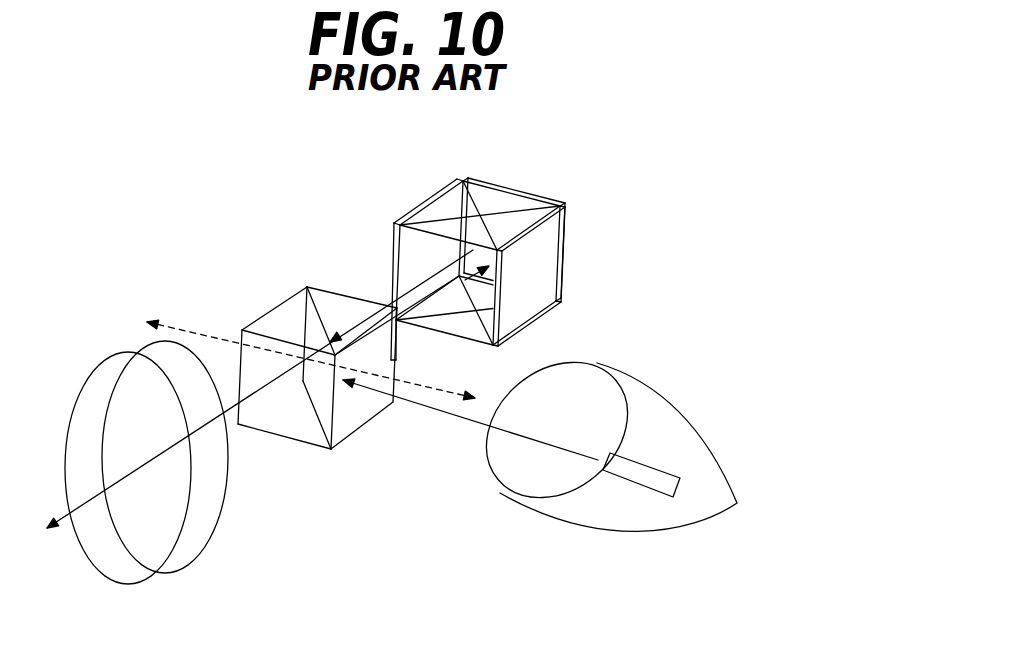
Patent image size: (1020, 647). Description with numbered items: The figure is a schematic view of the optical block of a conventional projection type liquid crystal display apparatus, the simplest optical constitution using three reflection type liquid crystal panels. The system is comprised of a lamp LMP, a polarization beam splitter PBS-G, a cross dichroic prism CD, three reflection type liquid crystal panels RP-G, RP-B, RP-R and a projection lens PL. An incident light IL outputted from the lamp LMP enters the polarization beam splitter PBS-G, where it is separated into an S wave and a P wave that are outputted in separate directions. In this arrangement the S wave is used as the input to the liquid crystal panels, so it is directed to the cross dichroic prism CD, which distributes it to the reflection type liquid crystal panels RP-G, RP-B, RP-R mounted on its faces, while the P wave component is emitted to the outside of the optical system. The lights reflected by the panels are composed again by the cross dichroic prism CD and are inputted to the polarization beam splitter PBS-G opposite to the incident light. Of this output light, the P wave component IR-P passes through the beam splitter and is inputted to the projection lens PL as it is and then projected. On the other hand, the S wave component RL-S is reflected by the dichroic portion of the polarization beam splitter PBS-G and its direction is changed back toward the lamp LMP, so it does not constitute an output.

The reflection type liquid crystal panel RP-G is at (402, 213).
The cross dichroic prism CD is at (452, 210).
The reflection type liquid crystal panel RP-B is at (527, 184).
The reflection type liquid crystal panel RP-R is at (558, 266).
The P wave component IR-P is at (170, 316).
The S wave component RL-S is at (437, 389).
The incident light IL is at (440, 409).
The polarization beam splitter PBS-G is at (290, 443).
The projection lens PL is at (213, 552).
The lamp LMP is at (535, 519).